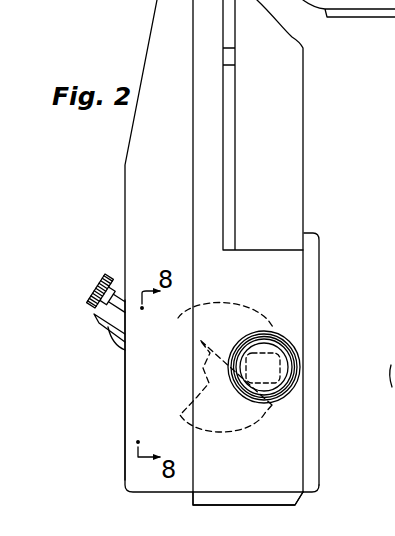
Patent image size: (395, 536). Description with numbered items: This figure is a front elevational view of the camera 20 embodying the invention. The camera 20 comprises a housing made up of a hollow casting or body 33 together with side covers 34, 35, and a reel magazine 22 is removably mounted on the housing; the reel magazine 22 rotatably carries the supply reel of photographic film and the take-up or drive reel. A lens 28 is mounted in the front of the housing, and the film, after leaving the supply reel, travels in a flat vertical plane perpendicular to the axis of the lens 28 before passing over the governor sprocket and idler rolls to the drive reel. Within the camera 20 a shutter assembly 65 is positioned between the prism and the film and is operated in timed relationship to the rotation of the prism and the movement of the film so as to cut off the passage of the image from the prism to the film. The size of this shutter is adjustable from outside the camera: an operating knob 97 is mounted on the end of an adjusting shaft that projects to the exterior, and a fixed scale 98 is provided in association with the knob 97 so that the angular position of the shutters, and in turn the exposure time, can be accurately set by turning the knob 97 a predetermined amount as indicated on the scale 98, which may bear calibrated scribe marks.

The camera 20 is at (124, 209).
The reel magazine 22 is at (263, 125).
The lens 28 is at (289, 349).
The body 33 is at (248, 475).
The side cover 34 is at (133, 395).
The side cover 35 is at (319, 396).
The shutter assembly 65 is at (243, 307).
The operating knob 97 is at (103, 276).
The fixed scale 98 is at (107, 333).